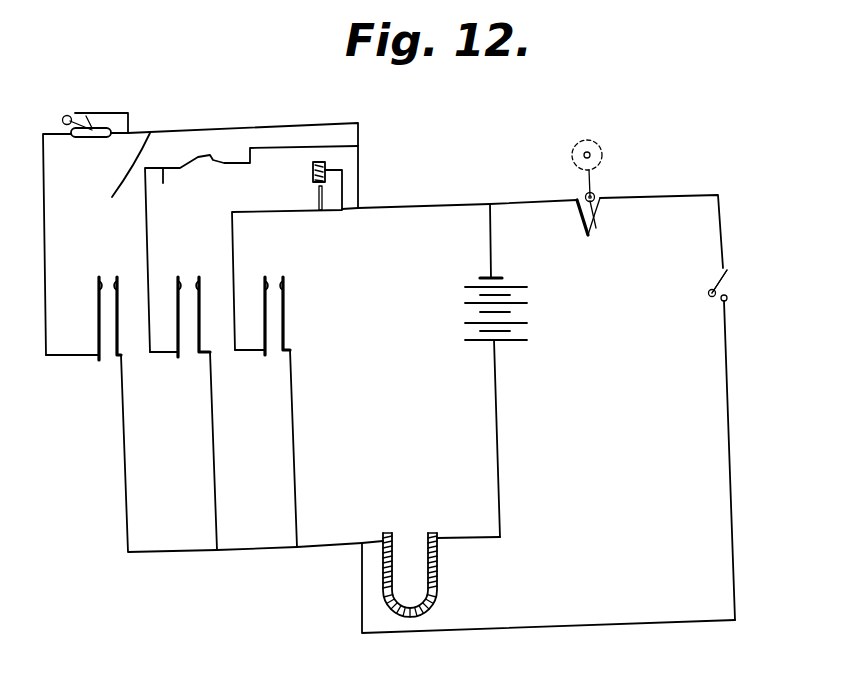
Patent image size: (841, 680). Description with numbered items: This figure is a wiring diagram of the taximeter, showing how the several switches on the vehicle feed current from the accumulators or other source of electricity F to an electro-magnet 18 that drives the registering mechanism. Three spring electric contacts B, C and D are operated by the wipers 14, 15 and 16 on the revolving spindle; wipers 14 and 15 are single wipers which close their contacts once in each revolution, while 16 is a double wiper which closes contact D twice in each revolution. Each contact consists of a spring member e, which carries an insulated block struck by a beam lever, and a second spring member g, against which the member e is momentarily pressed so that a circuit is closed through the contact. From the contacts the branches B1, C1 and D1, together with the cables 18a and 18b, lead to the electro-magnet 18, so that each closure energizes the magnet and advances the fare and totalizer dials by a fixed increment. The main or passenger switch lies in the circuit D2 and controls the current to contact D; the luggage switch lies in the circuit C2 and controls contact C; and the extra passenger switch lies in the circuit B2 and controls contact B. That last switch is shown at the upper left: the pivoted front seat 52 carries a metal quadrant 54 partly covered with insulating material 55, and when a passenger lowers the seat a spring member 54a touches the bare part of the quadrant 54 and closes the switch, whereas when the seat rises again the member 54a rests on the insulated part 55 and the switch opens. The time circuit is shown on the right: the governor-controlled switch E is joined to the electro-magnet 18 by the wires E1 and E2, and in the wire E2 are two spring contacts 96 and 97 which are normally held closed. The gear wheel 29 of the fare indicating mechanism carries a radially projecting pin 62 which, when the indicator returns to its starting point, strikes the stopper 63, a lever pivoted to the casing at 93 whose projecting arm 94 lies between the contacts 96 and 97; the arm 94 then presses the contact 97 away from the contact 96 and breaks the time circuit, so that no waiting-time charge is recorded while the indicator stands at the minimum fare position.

The metal quadrant 54 is at (63, 120).
The spring member 54a is at (68, 117).
The insulating material 55 is at (87, 116).
The front seat 52 is at (102, 138).
The circuit B² B2 is at (46, 205).
The circuit C² C2 is at (148, 210).
The circuit D² D2 is at (287, 200).
The spring electric contact B is at (80, 297).
The spring electric contact C is at (173, 296).
The spring electric contact D is at (259, 293).
The wiper 14 is at (96, 306).
The wiper 15 is at (178, 305).
The double wiper 16 is at (293, 300).
The spring member e is at (175, 283).
The spring member g is at (223, 280).
The relay B lower circuit B1 is at (125, 437).
The relay C lower circuit C1 is at (212, 433).
The relay D lower circuit D1 is at (293, 430).
The cable 18a is at (236, 551).
The electro-magnet 18 is at (431, 575).
The cable 18b is at (496, 409).
The wire E² E2 is at (507, 203).
The accumulators F is at (473, 309).
The gear wheel 29 is at (601, 149).
The radially projecting pin 62 is at (596, 183).
The stopper lever 63 is at (585, 184).
The pivot 93 is at (594, 193).
The spring contact 96 is at (582, 214).
The projecting arm 94 is at (602, 209).
The spring contact 97 is at (600, 226).
The switch E is at (732, 288).
The wire E¹ E1 is at (668, 620).